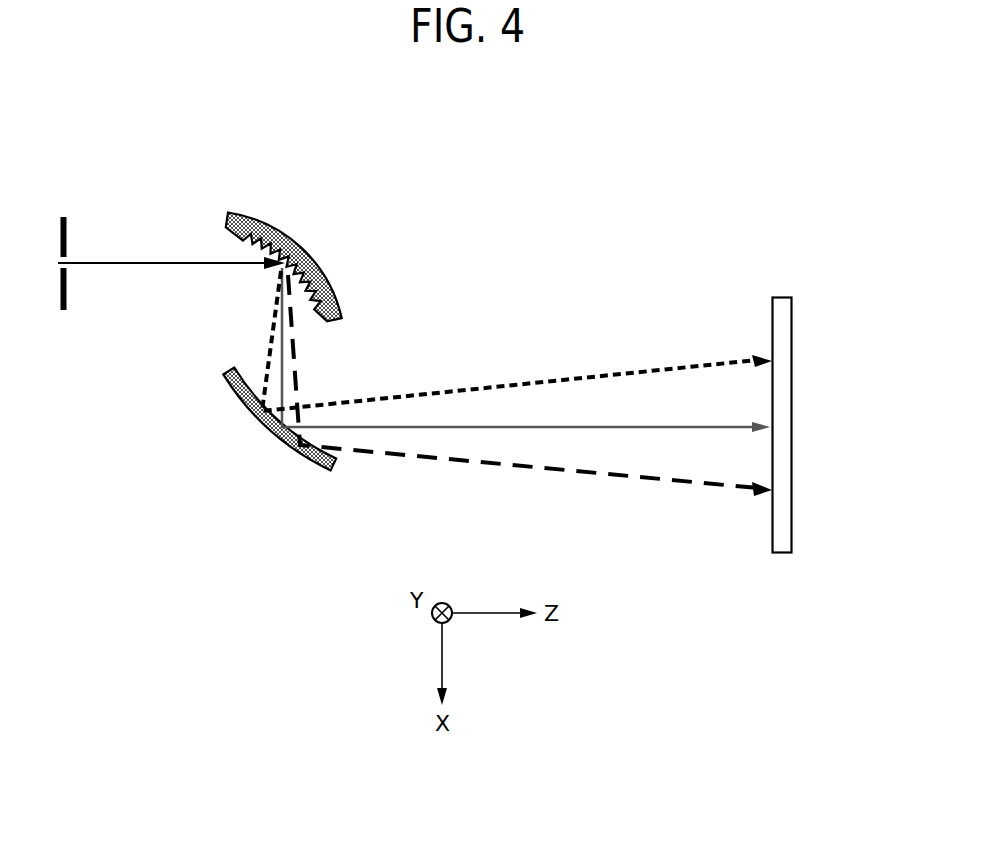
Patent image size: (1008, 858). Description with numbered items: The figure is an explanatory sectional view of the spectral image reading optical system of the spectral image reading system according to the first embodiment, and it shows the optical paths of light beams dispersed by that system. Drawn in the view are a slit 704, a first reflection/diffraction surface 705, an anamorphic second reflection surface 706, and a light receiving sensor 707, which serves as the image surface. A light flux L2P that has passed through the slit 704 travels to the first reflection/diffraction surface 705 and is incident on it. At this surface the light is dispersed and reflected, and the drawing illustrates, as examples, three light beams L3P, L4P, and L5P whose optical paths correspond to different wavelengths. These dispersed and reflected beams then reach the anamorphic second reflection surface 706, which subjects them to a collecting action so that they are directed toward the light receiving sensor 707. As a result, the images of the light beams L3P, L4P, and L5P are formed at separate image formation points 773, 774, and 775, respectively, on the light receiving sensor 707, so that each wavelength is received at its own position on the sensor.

The slit 704 is at (63, 216).
The first reflection/diffraction surface 705 is at (257, 217).
The anamorphic second reflection surface 706 is at (262, 438).
The light receiving sensor 707 is at (781, 296).
The image formation point 773 is at (792, 427).
The image formation point 774 is at (792, 362).
The image formation point 775 is at (792, 489).
The light flux L2P is at (158, 262).
The light beam L3P is at (422, 426).
The light beam L4P is at (493, 384).
The light beam L5P is at (588, 467).